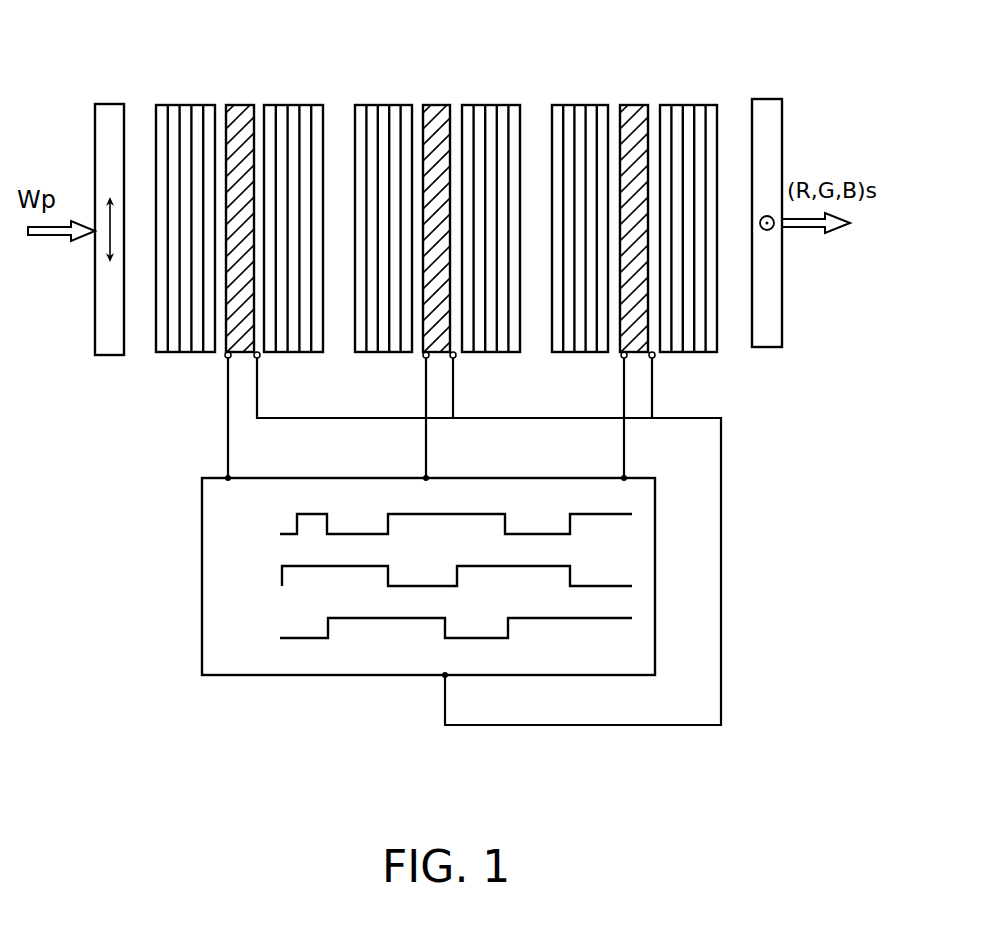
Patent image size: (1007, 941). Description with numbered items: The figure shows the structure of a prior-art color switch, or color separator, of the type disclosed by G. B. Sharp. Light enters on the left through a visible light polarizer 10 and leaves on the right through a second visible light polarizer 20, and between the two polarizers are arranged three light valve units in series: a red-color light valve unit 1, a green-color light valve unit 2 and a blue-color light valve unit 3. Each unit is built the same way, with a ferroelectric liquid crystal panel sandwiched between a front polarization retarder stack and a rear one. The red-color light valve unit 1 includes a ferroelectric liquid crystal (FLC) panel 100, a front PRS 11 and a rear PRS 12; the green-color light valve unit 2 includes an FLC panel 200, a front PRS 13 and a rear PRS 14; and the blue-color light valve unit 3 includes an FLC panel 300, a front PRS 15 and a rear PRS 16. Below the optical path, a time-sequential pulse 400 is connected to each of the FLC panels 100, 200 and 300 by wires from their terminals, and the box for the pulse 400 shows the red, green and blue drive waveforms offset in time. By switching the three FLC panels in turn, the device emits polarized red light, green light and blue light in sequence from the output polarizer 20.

The red-color light valve unit 1 is at (153, 62).
The green-color light valve unit 2 is at (352, 62).
The blue-color light valve unit 3 is at (720, 62).
The visible light polarizer 10 is at (109, 212).
The visible light polarizer 20 is at (766, 205).
The front PRS 11 is at (185, 251).
The rear PRS 12 is at (293, 251).
The front PRS 13 is at (383, 251).
The rear PRS 14 is at (491, 251).
The front PRS 15 is at (580, 251).
The rear PRS 16 is at (688, 251).
The ferroelectric liquid crystal panel 100 is at (238, 218).
The FLC panel 200 is at (437, 218).
The FLC panel 300 is at (633, 218).
The time-sequential pulse 400 is at (202, 578).